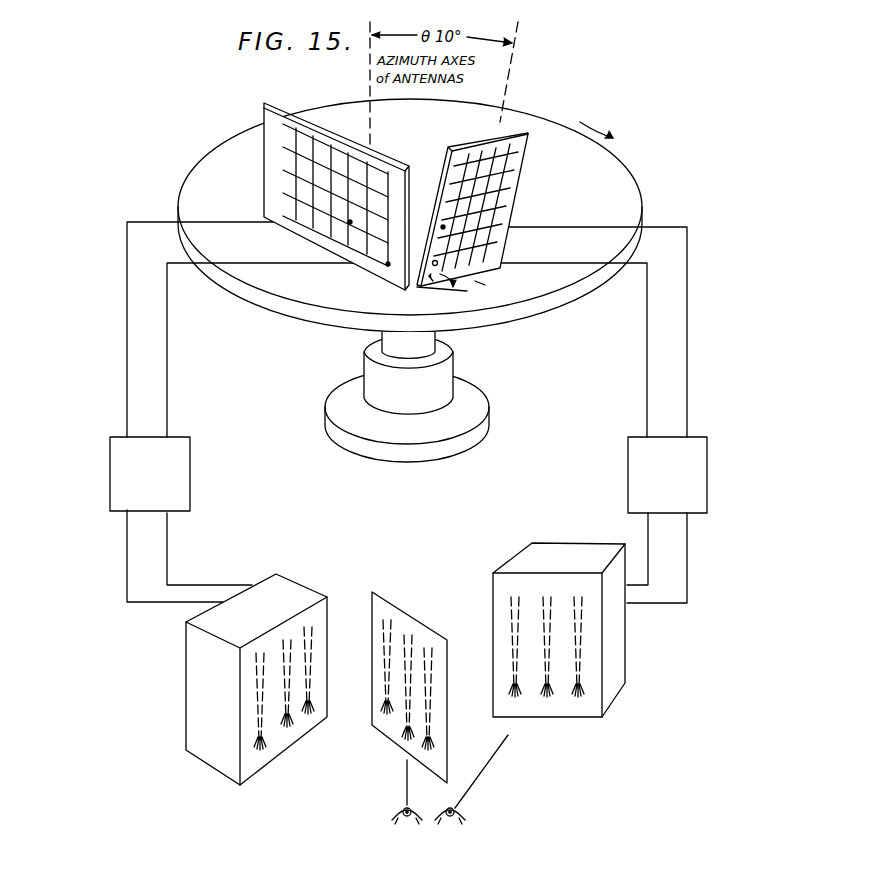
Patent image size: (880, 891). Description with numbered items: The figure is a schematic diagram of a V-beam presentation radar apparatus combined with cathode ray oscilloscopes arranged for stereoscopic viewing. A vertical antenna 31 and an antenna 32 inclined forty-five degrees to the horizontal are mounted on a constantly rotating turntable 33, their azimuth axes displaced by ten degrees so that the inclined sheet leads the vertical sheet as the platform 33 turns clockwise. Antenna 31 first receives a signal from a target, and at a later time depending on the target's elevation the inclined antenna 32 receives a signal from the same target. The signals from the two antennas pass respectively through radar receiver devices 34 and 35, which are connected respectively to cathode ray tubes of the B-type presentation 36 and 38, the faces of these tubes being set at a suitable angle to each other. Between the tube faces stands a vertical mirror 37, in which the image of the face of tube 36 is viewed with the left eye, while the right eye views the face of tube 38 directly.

The vertical antenna 31 is at (335, 138).
The antenna 32 is at (488, 130).
The rotating turntable 33 is at (557, 127).
The radar receiver device 34 is at (122, 455).
The radar receiver device 35 is at (697, 445).
The cathode ray tube of the B-type presentation 36 is at (188, 673).
The vertical mirror 37 is at (372, 592).
The cathode ray tube of the B-type presentation 38 is at (613, 690).